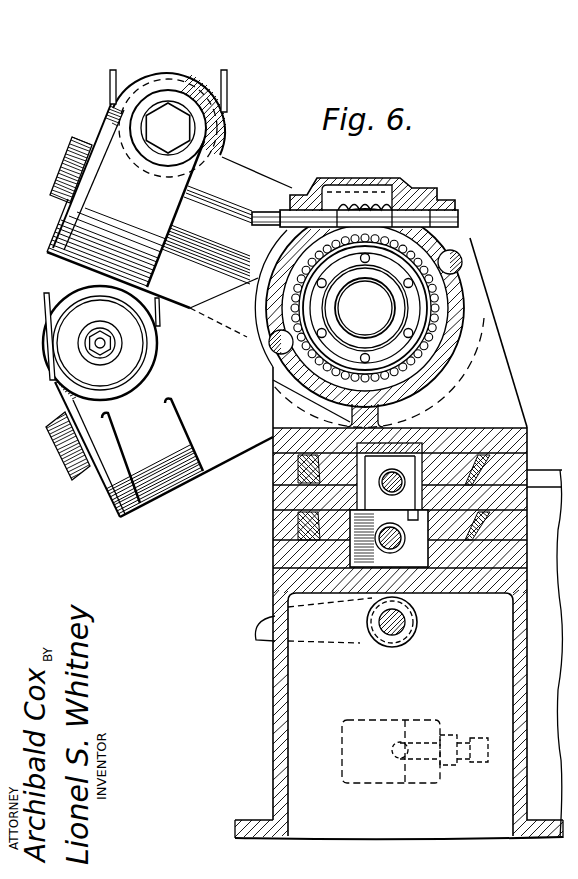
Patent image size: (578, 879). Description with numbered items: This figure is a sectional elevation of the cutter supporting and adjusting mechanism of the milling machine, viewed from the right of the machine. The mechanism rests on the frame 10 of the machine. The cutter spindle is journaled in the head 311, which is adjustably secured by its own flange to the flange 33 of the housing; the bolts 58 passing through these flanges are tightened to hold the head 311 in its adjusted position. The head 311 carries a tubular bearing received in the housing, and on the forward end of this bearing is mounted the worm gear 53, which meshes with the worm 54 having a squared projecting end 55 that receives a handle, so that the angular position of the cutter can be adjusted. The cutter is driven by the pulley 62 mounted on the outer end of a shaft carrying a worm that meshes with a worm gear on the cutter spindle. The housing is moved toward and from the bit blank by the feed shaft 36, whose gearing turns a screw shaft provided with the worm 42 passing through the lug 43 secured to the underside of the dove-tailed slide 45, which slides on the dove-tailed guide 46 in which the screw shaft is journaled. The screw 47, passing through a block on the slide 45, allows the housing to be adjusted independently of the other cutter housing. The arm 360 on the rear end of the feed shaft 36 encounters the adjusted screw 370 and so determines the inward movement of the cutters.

The frame 10 is at (399, 538).
The flange of housing 33 is at (458, 248).
The feed shaft 36 is at (398, 630).
The worm 42 is at (400, 550).
The lug 43 is at (367, 557).
The dove-tailed slide 45 is at (288, 508).
The dove-tailed guide 46 is at (276, 557).
The screw 47 is at (433, 423).
The worm gear 53 is at (440, 308).
The worm 54 is at (387, 203).
The projecting end 55 is at (272, 218).
The bolts 58 is at (461, 266).
The pulley 62 is at (222, 102).
The head 311 is at (241, 267).
The arm 360 is at (265, 636).
The adjusted screw 370 is at (400, 757).